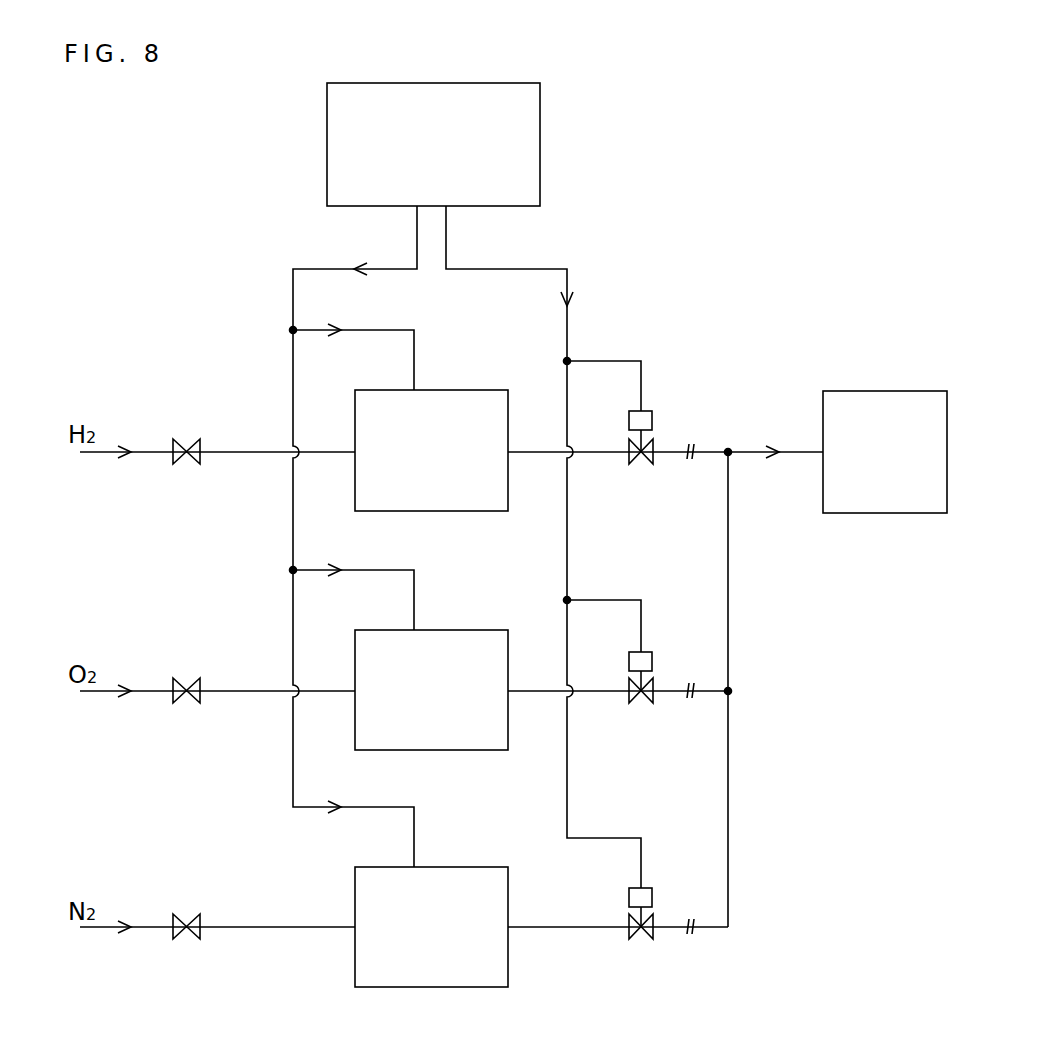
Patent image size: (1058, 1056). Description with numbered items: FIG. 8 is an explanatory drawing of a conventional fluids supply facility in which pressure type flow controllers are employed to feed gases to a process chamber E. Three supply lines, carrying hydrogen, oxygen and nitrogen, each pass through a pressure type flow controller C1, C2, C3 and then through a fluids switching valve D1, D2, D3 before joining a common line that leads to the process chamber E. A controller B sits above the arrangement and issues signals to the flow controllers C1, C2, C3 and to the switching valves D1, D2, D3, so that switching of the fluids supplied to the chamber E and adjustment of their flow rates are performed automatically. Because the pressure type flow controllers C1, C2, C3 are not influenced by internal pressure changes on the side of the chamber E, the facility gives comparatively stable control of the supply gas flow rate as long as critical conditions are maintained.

The controller B is at (343, 162).
The pressure type flow controller C1 is at (447, 410).
The pressure type flow controller C2 is at (448, 652).
The pressure type flow controller C3 is at (447, 888).
The fluids switching valve D1 is at (654, 422).
The fluids switching valve D2 is at (654, 665).
The fluids switching valve D3 is at (652, 905).
The process chamber E is at (887, 418).